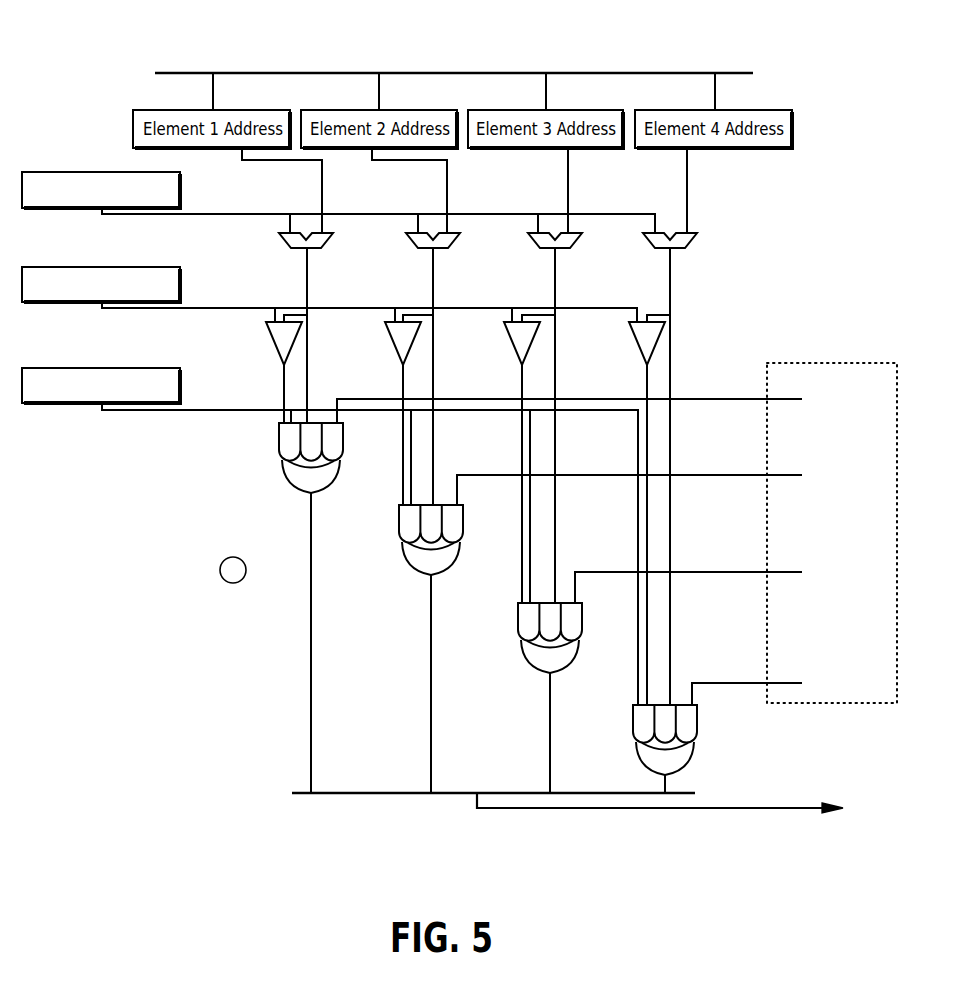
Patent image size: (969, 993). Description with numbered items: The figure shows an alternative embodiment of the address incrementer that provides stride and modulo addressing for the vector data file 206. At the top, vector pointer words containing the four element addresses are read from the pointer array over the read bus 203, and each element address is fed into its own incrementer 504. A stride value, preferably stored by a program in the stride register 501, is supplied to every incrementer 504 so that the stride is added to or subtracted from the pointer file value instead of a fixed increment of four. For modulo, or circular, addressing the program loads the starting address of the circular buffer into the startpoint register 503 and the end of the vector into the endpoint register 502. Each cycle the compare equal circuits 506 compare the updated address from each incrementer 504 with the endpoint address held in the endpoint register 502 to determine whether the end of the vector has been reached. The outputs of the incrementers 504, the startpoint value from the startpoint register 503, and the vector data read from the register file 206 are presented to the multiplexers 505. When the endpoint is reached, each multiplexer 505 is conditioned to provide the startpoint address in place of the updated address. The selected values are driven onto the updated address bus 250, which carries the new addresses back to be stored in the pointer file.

The read bus 203 is at (293, 72).
The vector data file 206 is at (812, 363).
The updated address bus 250 is at (647, 808).
The stride register 501 is at (57, 208).
The endpoint register 502 is at (57, 302).
The startpoint register 503 is at (57, 403).
The incrementer 504 is at (280, 247).
The multiplexer 505 is at (420, 553).
The compare equal circuit 506 is at (272, 340).